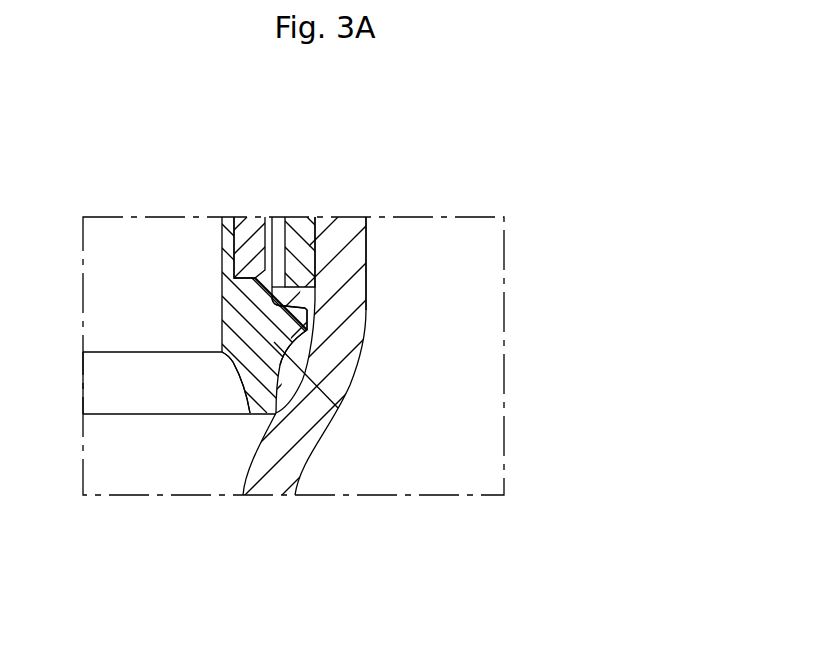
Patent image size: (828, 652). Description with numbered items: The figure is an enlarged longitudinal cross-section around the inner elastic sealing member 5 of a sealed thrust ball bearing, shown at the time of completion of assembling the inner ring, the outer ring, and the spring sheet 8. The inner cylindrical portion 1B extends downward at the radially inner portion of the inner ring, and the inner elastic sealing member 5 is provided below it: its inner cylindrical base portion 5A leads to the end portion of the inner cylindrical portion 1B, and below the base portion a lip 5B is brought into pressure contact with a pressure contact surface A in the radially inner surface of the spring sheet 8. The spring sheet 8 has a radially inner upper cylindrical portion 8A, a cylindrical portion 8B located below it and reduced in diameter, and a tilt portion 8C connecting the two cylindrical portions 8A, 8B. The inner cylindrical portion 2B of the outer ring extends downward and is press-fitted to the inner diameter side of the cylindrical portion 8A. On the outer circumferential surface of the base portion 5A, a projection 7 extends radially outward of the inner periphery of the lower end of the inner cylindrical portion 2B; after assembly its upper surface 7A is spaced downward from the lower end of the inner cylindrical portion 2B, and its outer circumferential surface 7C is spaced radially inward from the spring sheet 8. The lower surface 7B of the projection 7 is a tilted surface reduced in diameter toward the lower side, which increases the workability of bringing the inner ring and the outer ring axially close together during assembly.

The inner cylindrical portion 1B is at (248, 233).
The inner cylindrical portion 2B is at (297, 233).
The inner elastic sealing member 5 is at (200, 334).
The inner cylindrical base portion 5A is at (233, 310).
The lip 5B is at (240, 374).
The projection 7 is at (330, 406).
The upper surface 7A is at (290, 304).
The lower surface 7B is at (318, 352).
The outer circumferential surface 7C is at (309, 320).
The spring sheet 8 is at (385, 266).
The cylindrical portion 8A is at (366, 247).
The cylindrical portion 8B is at (269, 488).
The tilt portion 8C is at (337, 399).
The pressure contact surface A is at (272, 417).